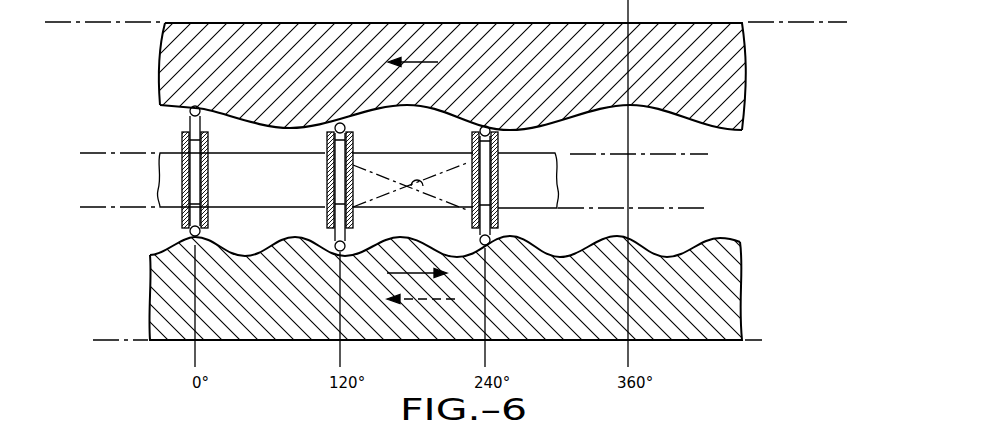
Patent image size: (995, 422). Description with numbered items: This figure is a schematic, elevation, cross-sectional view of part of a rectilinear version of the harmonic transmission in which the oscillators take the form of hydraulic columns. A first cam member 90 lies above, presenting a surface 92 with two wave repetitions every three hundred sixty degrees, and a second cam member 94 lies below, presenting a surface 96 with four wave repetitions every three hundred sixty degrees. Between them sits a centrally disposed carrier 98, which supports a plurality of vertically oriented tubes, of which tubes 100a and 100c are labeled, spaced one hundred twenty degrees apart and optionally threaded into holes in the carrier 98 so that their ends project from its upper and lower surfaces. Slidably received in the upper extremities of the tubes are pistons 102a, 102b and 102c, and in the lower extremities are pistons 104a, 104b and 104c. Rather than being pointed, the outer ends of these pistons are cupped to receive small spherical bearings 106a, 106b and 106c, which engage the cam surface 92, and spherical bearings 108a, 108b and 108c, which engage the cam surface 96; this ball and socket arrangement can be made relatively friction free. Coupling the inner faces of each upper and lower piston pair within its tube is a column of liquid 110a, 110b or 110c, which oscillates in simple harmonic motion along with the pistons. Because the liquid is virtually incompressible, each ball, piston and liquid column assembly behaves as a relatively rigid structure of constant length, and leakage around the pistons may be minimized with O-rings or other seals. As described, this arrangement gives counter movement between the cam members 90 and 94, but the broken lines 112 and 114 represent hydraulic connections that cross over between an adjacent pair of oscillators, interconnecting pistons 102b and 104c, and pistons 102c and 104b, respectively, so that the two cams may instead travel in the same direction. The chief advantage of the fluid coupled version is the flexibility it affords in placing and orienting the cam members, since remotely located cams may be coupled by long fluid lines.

The first cam member 90 is at (526, 83).
The surface of first cam member 92 is at (548, 122).
The second cam member 94 is at (526, 297).
The surface of second cam member 96 is at (412, 237).
The carrier 98 is at (284, 187).
The tube 100a is at (172, 176).
The tube 100c is at (491, 189).
The piston 102a is at (200, 126).
The piston 102b is at (350, 133).
The piston 102c is at (495, 135).
The piston 104a is at (201, 218).
The piston 104b is at (353, 230).
The piston 104c is at (495, 222).
The spherical bearing 106a is at (189, 112).
The spherical bearing 106b is at (334, 129).
The spherical bearing 106c is at (480, 129).
The spherical bearing 108a is at (189, 231).
The spherical bearing 108b is at (336, 242).
The spherical bearing 108c is at (481, 241).
The column of liquid 110a is at (198, 176).
The column of liquid 110b is at (334, 176).
The column of liquid 110c is at (495, 171).
The broken line 112 is at (413, 181).
The broken line 114 is at (424, 182).